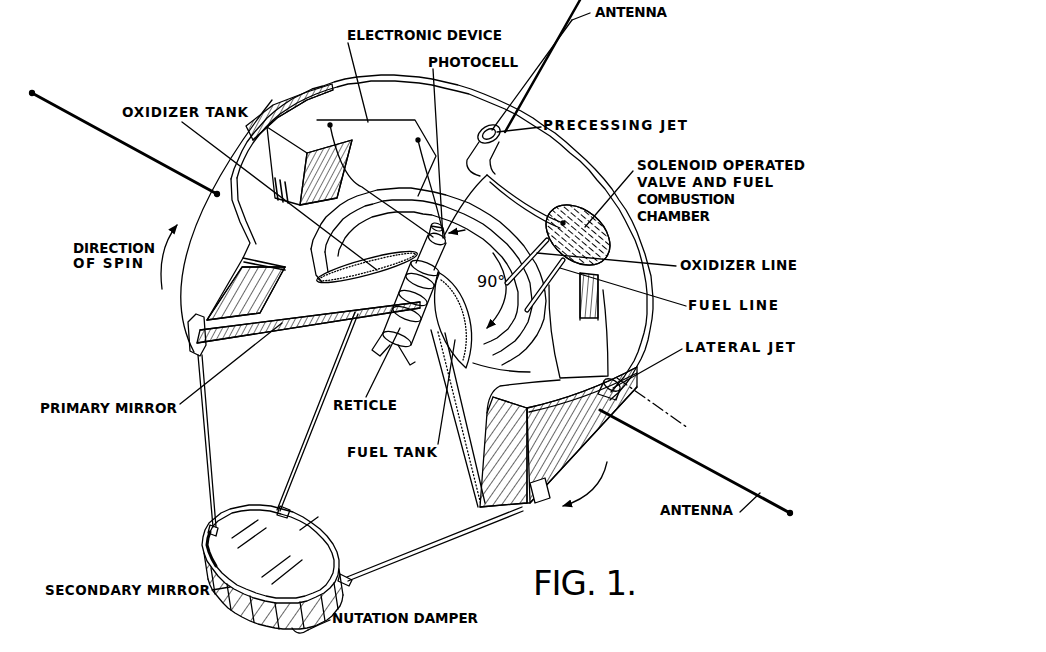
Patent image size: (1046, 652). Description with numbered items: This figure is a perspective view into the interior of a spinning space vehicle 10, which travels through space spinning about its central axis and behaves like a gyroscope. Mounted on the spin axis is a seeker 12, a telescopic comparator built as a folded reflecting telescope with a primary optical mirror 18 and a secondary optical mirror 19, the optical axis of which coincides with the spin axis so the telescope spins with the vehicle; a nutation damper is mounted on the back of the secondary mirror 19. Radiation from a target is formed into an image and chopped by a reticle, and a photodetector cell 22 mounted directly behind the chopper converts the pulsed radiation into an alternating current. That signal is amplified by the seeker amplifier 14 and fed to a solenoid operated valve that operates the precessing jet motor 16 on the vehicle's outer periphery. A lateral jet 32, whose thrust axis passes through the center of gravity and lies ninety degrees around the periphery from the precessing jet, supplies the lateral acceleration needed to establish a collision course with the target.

The space vehicle 10 is at (283, 72).
The seeker 12 is at (409, 353).
The seeker amplifier 14 is at (305, 122).
The precessing jet motor 16 is at (484, 122).
The primary optical mirror 18 is at (322, 320).
The secondary optical mirror 19 is at (258, 528).
The photodetector cell 22 is at (426, 240).
The lateral jet 32 is at (597, 408).